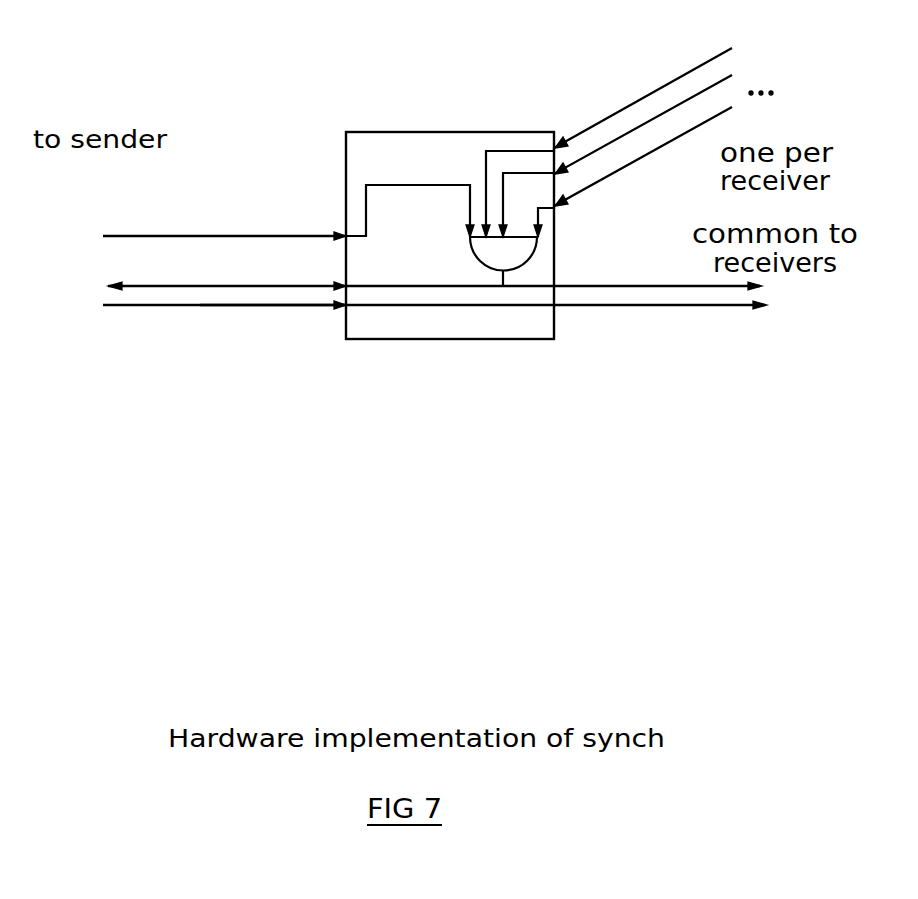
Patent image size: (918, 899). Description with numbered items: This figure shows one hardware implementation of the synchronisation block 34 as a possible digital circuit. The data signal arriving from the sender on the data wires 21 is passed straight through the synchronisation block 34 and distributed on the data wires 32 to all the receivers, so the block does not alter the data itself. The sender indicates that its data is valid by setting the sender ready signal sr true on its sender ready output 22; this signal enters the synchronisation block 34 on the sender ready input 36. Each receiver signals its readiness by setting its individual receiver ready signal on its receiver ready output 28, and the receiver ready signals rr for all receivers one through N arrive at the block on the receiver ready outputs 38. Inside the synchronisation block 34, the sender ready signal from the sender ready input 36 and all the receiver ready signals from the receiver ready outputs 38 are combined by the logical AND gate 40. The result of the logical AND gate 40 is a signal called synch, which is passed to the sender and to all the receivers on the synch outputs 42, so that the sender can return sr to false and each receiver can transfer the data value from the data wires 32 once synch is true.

The synchronisation block 34 is at (362, 138).
The logical AND gate 40 is at (537, 247).
The sender ready input 36 is at (145, 236).
The sender ready output 22 is at (245, 236).
The synch outputs 42 is at (137, 286).
The data wires 21 is at (143, 305).
The receiver ready output 28 is at (247, 305).
The data wires 32 is at (653, 305).
The receiver ready outputs 38 is at (661, 148).